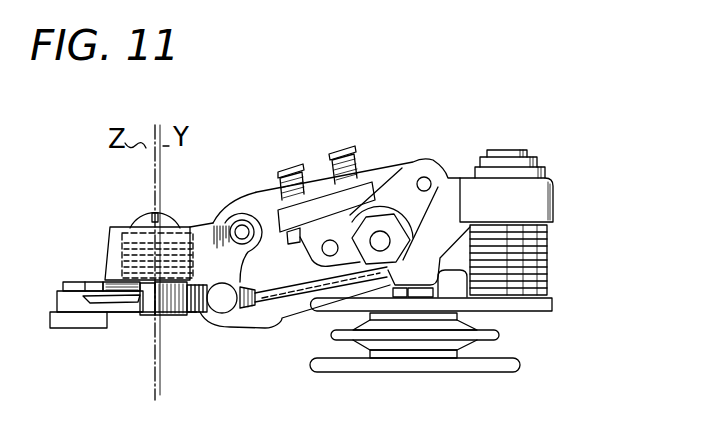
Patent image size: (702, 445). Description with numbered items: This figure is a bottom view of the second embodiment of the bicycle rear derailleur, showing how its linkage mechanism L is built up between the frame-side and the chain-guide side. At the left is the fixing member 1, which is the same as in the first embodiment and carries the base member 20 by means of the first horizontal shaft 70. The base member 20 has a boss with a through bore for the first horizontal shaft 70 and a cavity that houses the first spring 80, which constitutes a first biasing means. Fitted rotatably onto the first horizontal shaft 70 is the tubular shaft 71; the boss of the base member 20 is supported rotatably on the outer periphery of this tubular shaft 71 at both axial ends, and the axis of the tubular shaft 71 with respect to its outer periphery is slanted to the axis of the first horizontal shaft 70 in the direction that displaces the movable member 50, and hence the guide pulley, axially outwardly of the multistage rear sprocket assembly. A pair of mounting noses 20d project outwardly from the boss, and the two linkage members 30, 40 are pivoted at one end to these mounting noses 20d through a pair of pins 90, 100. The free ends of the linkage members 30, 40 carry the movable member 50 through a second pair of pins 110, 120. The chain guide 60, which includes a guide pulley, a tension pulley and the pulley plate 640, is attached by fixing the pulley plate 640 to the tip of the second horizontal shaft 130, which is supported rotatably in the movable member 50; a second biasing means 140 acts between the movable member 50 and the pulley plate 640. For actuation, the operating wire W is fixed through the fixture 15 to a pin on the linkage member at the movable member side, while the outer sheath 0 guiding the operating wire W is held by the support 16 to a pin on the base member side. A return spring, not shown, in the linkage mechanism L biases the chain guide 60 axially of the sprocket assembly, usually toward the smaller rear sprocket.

The fixing member 1 is at (124, 318).
The outer sheath 0 is at (149, 318).
The support 16 is at (178, 312).
The pin 100 is at (222, 313).
The operating wire W is at (272, 296).
The linkage member 40 is at (301, 305).
The linkage mechanism L is at (265, 185).
The base member 20 is at (110, 228).
The mounting nose 20d is at (222, 224).
The pin 90 is at (241, 222).
The first horizontal shaft 70 is at (140, 215).
The first spring 80 is at (120, 250).
The tubular shaft 71 is at (120, 273).
The linkage member 30 is at (312, 182).
The fixture 15 is at (376, 212).
The pin 110 is at (428, 177).
The second horizontal shaft 130 is at (513, 150).
The movable member 50 is at (556, 200).
The second biasing means 140 is at (548, 250).
The pulley plate 640 is at (532, 309).
The pin 120 is at (383, 251).
The chain guide 60 is at (452, 374).